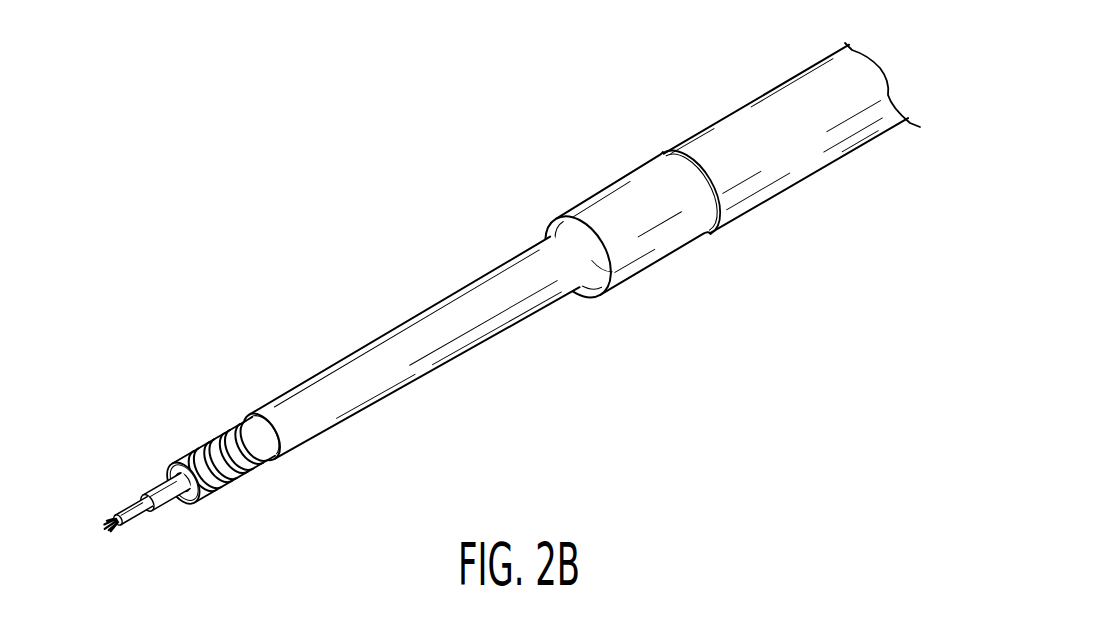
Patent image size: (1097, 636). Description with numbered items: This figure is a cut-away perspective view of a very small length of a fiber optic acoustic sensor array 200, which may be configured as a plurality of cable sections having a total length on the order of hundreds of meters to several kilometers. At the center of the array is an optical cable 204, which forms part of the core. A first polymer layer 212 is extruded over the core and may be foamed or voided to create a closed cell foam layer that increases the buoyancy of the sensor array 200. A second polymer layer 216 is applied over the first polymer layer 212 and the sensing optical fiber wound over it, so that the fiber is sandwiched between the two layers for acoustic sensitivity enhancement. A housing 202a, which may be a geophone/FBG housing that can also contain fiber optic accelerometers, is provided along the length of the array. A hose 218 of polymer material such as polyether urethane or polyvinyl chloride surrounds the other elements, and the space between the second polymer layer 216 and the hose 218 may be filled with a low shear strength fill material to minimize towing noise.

The fiber optic acoustic sensor array 200 is at (507, 318).
The optical cable 204 is at (123, 509).
The first polymer layer 212 is at (192, 446).
The second polymer layer 216 is at (322, 375).
The housing 202a is at (630, 278).
The hose 218 is at (786, 199).